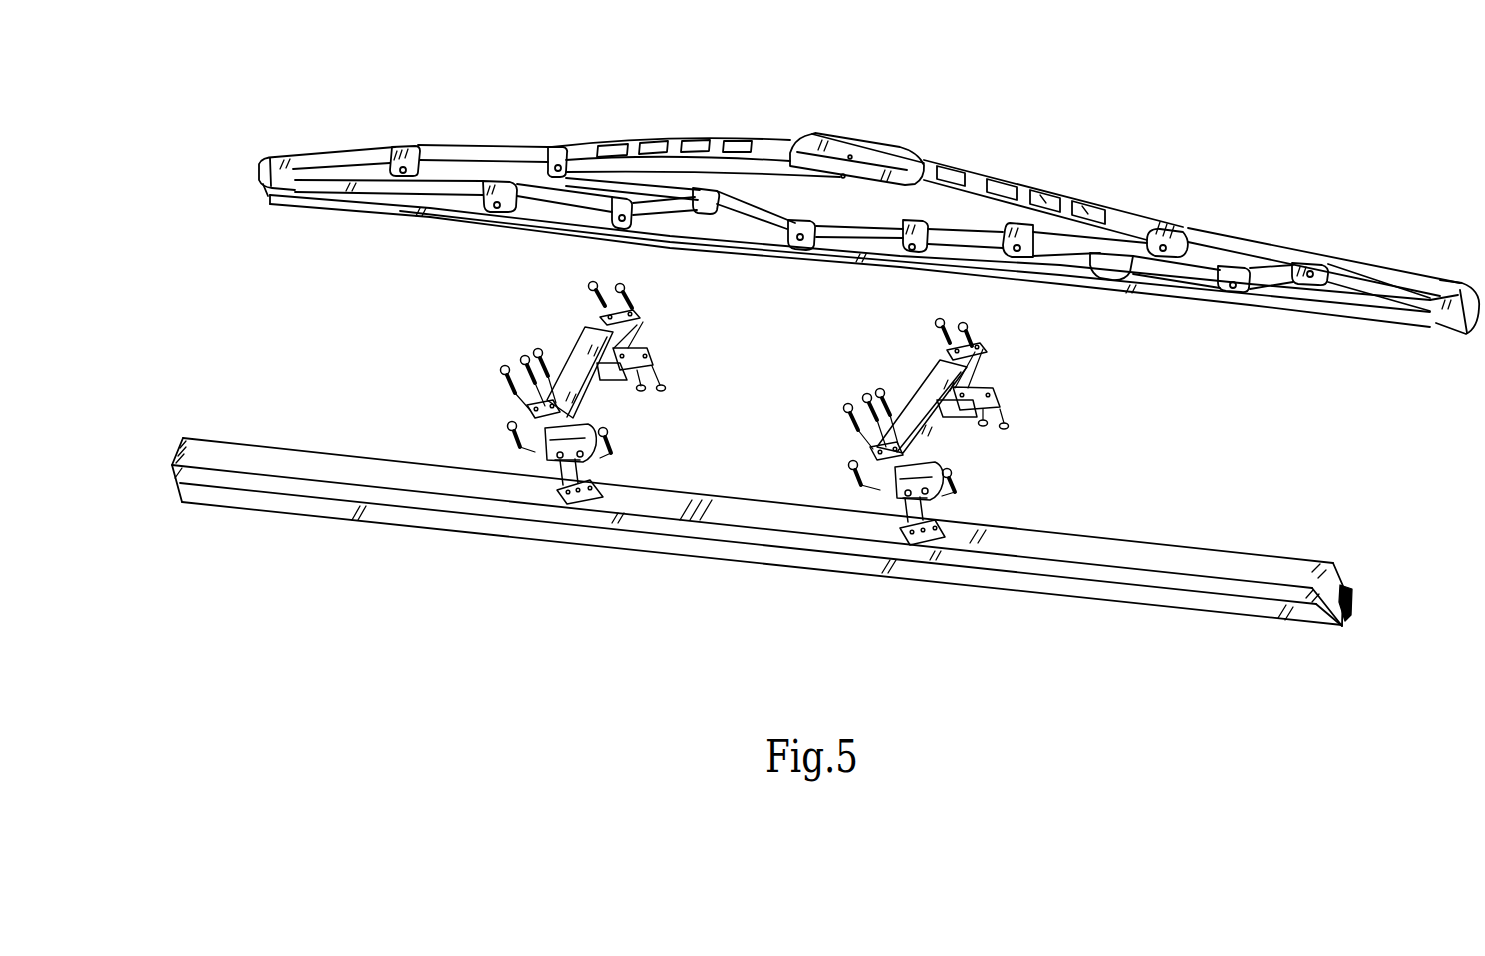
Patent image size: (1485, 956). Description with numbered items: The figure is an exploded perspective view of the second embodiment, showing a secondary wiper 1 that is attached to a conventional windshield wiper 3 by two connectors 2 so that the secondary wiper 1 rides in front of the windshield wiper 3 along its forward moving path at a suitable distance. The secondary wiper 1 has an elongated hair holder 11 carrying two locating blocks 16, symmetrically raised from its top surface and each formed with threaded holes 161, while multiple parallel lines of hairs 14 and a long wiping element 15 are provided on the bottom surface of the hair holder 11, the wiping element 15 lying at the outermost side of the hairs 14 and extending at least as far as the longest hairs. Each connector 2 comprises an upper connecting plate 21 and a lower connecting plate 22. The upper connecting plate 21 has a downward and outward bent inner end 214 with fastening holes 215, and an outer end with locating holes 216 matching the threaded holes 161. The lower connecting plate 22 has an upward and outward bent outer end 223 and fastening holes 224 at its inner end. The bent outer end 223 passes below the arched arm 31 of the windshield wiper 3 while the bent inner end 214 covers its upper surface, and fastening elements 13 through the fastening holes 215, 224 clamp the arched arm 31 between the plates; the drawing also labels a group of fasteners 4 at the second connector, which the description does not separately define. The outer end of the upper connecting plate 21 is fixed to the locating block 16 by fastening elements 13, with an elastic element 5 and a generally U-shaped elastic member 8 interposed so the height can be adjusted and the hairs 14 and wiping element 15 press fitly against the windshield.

The secondary wiper 1 is at (962, 590).
The hair holder 11 is at (336, 466).
The fastening elements 13 is at (520, 358).
The hairs 14 is at (1348, 590).
The wiping element 15 is at (1282, 614).
The locating blocks 16 is at (562, 502).
The threaded holes 161 is at (600, 480).
The connectors 2 is at (503, 348).
The upper connecting plate 21 is at (574, 356).
The bent inner end 214 is at (598, 315).
The fastening holes 215 is at (641, 313).
The locating holes 216 is at (528, 412).
The lower connecting plate 22 is at (628, 384).
The bent outer end 223 is at (648, 352).
The fastening holes 224 is at (660, 364).
The windshield wiper 3 is at (904, 131).
The arched arm 31 is at (769, 136).
The screws 4 is at (877, 398).
The elastic element 5 is at (548, 458).
The U-shaped elastic member 8 is at (580, 425).